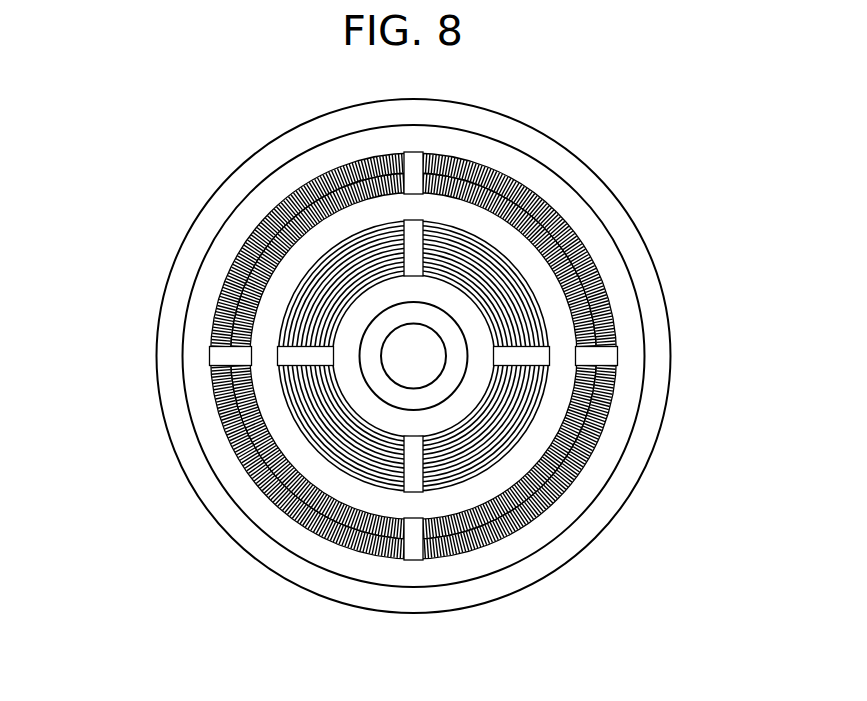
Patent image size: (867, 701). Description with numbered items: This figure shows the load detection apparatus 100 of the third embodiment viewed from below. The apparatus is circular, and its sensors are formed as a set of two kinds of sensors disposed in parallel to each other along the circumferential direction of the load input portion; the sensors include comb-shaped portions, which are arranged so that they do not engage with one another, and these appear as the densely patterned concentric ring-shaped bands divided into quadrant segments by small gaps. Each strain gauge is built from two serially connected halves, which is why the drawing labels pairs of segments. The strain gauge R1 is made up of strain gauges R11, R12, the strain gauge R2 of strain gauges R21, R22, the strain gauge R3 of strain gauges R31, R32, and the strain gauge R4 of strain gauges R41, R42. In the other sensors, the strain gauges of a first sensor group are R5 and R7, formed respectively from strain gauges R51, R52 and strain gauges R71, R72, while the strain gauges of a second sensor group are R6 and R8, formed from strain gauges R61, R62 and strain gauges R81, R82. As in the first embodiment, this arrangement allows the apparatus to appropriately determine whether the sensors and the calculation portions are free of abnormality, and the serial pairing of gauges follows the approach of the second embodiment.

The load detection apparatus 100 is at (128, 190).
The strain gauge R21 is at (367, 160).
The strain gauge R22 is at (460, 160).
The strain gauge R41 is at (337, 480).
The strain gauge R42 is at (490, 480).
The strain gauge R61 is at (332, 228).
The strain gauge R62 is at (495, 228).
The strain gauge R81 is at (467, 560).
The strain gauge R82 is at (360, 560).
The strain gauge R51 is at (527, 277).
The strain gauge R52 is at (300, 277).
The strain gauge R31 is at (537, 435).
The strain gauge R32 is at (290, 435).
The strain gauge R11 is at (340, 324).
The strain gauge R12 is at (487, 324).
The strain gauge R71 is at (340, 388).
The strain gauge R72 is at (487, 388).